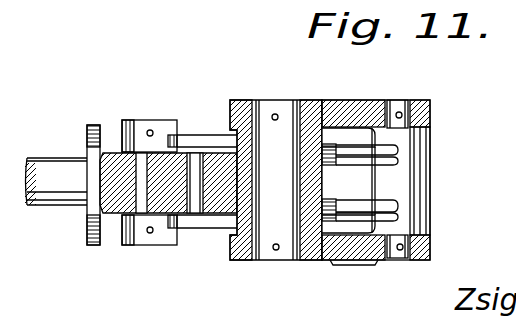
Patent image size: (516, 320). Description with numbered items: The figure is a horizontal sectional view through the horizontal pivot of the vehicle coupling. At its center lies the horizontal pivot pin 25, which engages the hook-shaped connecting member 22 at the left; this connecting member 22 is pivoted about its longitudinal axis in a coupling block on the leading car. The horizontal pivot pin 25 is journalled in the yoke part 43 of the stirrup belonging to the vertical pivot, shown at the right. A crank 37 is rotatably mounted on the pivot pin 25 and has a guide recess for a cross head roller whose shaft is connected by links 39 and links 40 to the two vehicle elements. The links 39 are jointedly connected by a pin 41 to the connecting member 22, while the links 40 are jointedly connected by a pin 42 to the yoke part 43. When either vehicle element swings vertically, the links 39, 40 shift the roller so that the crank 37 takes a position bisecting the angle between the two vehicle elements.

The hook-shaped connecting member 22 is at (104, 214).
The pin 41 is at (110, 152).
The crank 37 is at (205, 150).
The links 39 is at (177, 127).
The horizontal pivot pin 25 is at (263, 100).
The yoke part 43 is at (352, 113).
The pin 42 is at (392, 258).
The links 40 is at (332, 259).